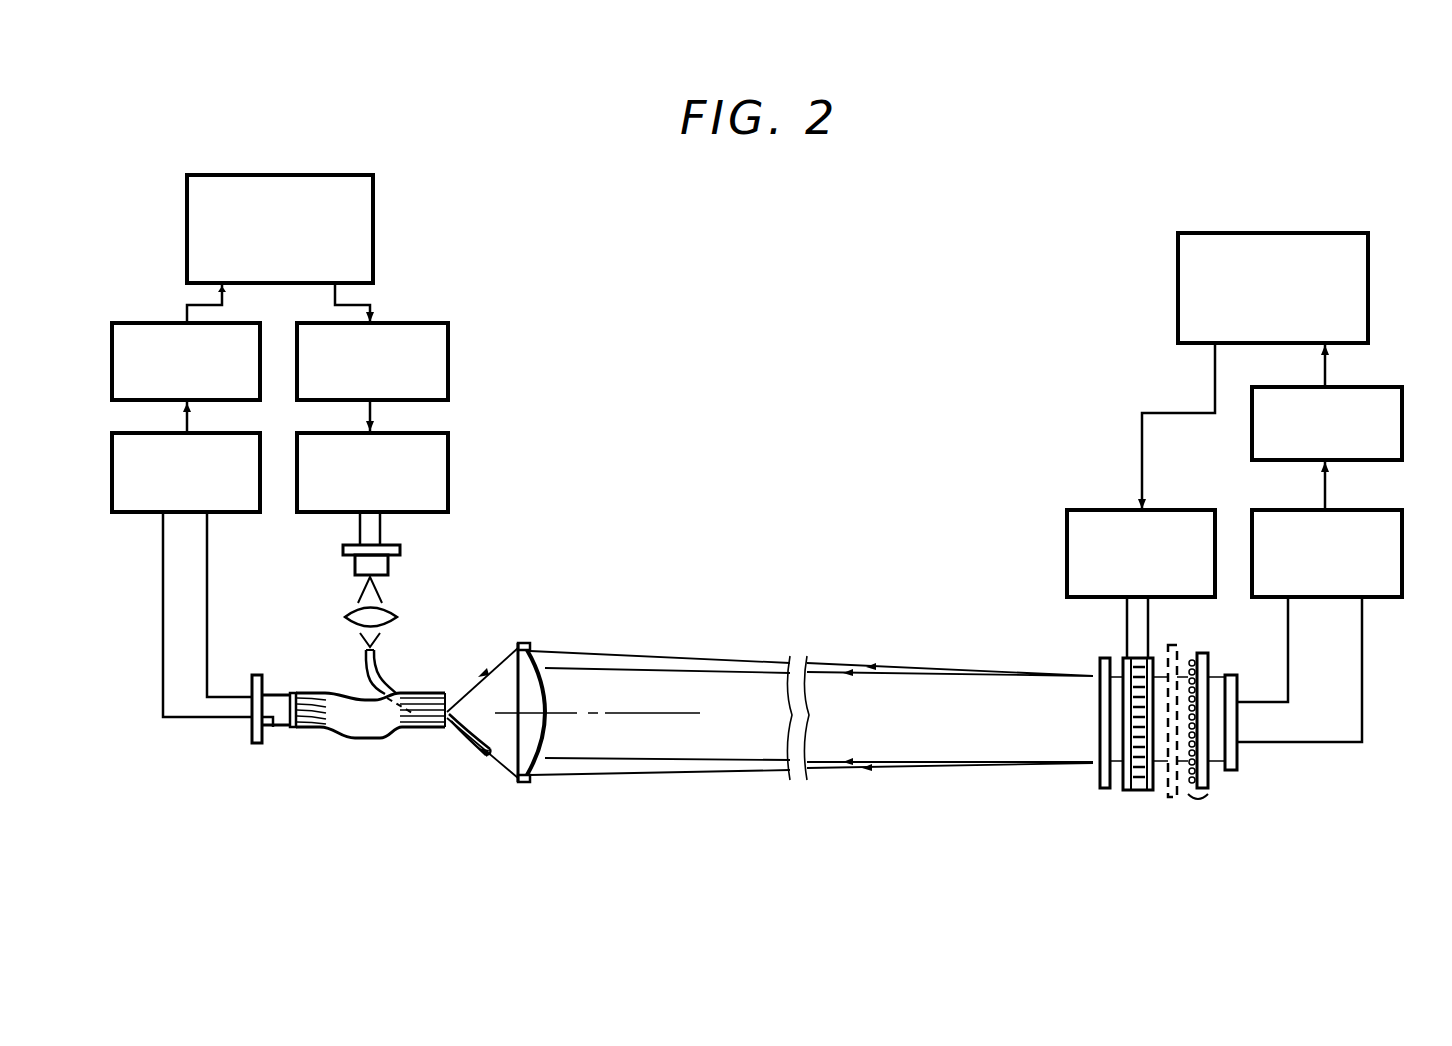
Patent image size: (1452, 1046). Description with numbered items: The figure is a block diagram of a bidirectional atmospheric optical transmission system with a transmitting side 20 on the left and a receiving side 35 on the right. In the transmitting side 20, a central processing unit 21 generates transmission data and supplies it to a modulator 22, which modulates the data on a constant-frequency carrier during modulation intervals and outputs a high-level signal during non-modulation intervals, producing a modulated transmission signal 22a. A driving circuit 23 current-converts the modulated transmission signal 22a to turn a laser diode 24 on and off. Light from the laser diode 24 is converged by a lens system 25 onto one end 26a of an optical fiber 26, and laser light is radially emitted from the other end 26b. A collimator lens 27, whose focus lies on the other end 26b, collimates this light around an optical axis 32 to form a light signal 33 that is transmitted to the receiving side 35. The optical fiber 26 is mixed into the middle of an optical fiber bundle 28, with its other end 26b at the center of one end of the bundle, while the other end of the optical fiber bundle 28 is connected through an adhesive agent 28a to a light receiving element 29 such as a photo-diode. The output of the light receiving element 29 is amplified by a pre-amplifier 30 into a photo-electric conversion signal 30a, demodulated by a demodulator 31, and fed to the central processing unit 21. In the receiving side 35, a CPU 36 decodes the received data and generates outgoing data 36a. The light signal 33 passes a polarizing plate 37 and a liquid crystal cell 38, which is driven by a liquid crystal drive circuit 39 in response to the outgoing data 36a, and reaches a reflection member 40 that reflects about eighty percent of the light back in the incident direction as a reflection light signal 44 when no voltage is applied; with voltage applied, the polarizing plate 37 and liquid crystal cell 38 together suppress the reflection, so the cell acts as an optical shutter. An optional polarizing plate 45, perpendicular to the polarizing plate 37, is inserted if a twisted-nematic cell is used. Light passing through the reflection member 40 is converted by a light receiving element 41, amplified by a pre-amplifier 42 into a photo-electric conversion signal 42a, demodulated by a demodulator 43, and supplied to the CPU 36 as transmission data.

The transmitting side 20 is at (420, 306).
The central processing unit 21 is at (187, 243).
The modulator 22 is at (448, 373).
The modulated transmission signal 22a is at (372, 418).
The driving circuit 23 is at (448, 487).
The laser diode 24 is at (390, 568).
The lens system 25 is at (352, 608).
The optical fiber 26 is at (382, 666).
The one end of optical fiber 26a is at (364, 646).
The other end of optical fiber 26b is at (473, 742).
The collimator lens 27 is at (545, 737).
The optical fiber bundle 28 is at (357, 740).
The adhesive agent 28a is at (291, 730).
The light receiving element 29 is at (273, 742).
The pre-amplifier 30 is at (112, 474).
The photo-electric conversion signal 30a is at (187, 418).
The demodulator 31 is at (112, 373).
The optical axis 32 is at (673, 716).
The light signal 33 is at (832, 677).
The receiving side 35 is at (1118, 290).
The CPU 36 is at (1370, 280).
The outgoing data 36a is at (1162, 413).
The polarizing plate 37 is at (1105, 790).
The liquid crystal cell 38 is at (1140, 792).
The liquid crystal drive circuit 39 is at (1097, 510).
The reflection member 40 is at (1199, 808).
The light receiving element 41 is at (1240, 772).
The pre-amplifier 42 is at (1393, 597).
The photo-electric conversion signal 42a is at (1330, 487).
The demodulator 43 is at (1385, 388).
The reflection light signal 44 is at (897, 663).
The polarizing plate 45 is at (1172, 800).